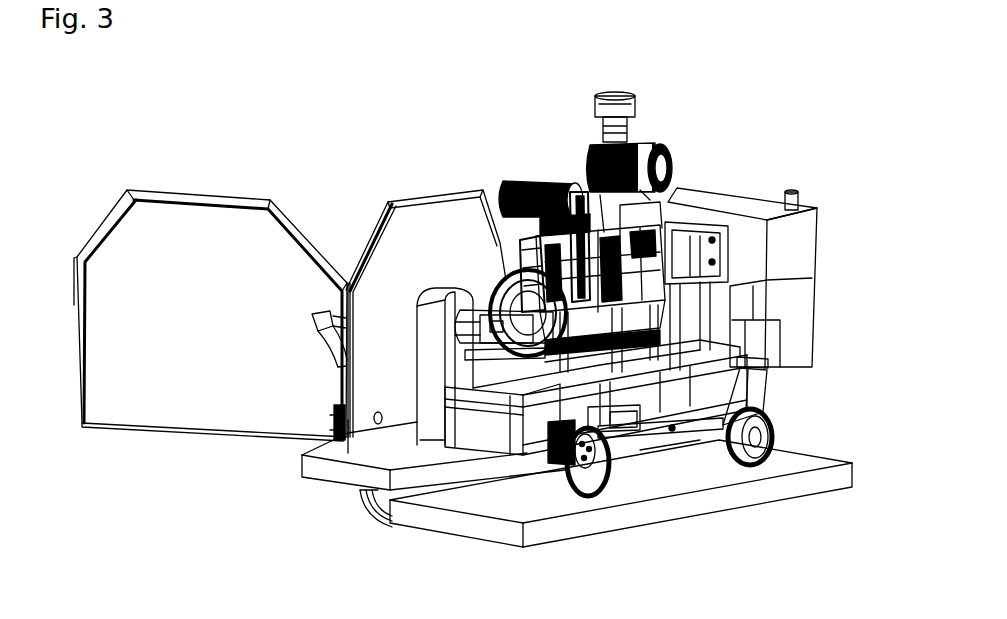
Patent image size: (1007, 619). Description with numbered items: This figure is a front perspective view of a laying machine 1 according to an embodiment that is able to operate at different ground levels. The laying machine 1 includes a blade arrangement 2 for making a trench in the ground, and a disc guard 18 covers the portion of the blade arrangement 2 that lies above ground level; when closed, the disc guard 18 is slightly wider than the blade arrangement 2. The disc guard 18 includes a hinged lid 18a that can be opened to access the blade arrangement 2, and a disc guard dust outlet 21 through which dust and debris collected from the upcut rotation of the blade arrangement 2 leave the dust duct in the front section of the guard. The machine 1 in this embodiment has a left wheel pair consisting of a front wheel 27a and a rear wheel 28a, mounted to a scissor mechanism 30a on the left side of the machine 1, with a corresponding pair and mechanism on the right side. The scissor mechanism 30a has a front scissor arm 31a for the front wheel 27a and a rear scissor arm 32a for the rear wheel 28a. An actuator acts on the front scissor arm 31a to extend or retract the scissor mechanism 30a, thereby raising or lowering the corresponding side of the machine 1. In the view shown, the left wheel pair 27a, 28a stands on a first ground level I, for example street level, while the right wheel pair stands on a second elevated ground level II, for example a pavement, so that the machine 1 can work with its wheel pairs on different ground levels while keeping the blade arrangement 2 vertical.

The laying machine 1 is at (605, 347).
The disc guard 18 is at (435, 250).
The hinged lid 18a is at (200, 250).
The disc guard dust outlet 21 is at (312, 318).
The blade arrangement 2 is at (367, 497).
The first ground level I is at (455, 523).
The second elevated ground level II is at (300, 462).
The front wheel 27a is at (580, 484).
The rear wheel 28a is at (768, 470).
The scissor mechanism 30a is at (708, 432).
The front scissor arm 31a is at (667, 462).
The rear scissor arm 32a is at (760, 456).